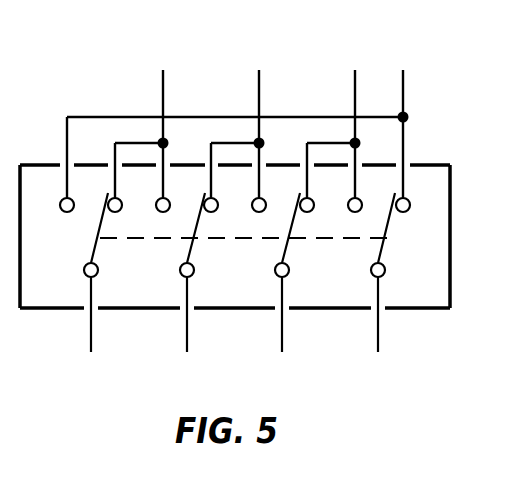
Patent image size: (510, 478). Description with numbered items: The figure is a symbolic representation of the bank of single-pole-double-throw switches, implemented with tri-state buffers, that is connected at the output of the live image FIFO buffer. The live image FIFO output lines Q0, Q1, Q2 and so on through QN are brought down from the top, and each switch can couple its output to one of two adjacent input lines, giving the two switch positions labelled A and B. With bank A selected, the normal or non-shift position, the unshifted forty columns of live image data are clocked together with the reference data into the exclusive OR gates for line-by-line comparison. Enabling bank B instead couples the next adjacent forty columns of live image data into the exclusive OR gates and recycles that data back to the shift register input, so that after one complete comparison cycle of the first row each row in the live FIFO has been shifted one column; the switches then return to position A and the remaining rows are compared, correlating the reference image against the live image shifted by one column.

The live image FIFO output QN is at (163, 123).
The live image FIFO output Q2 is at (258, 123).
The live image FIFO output Q1 is at (352, 116).
The live image FIFO output Q0 is at (403, 116).
The bank A is at (412, 188).
The bank B is at (362, 188).